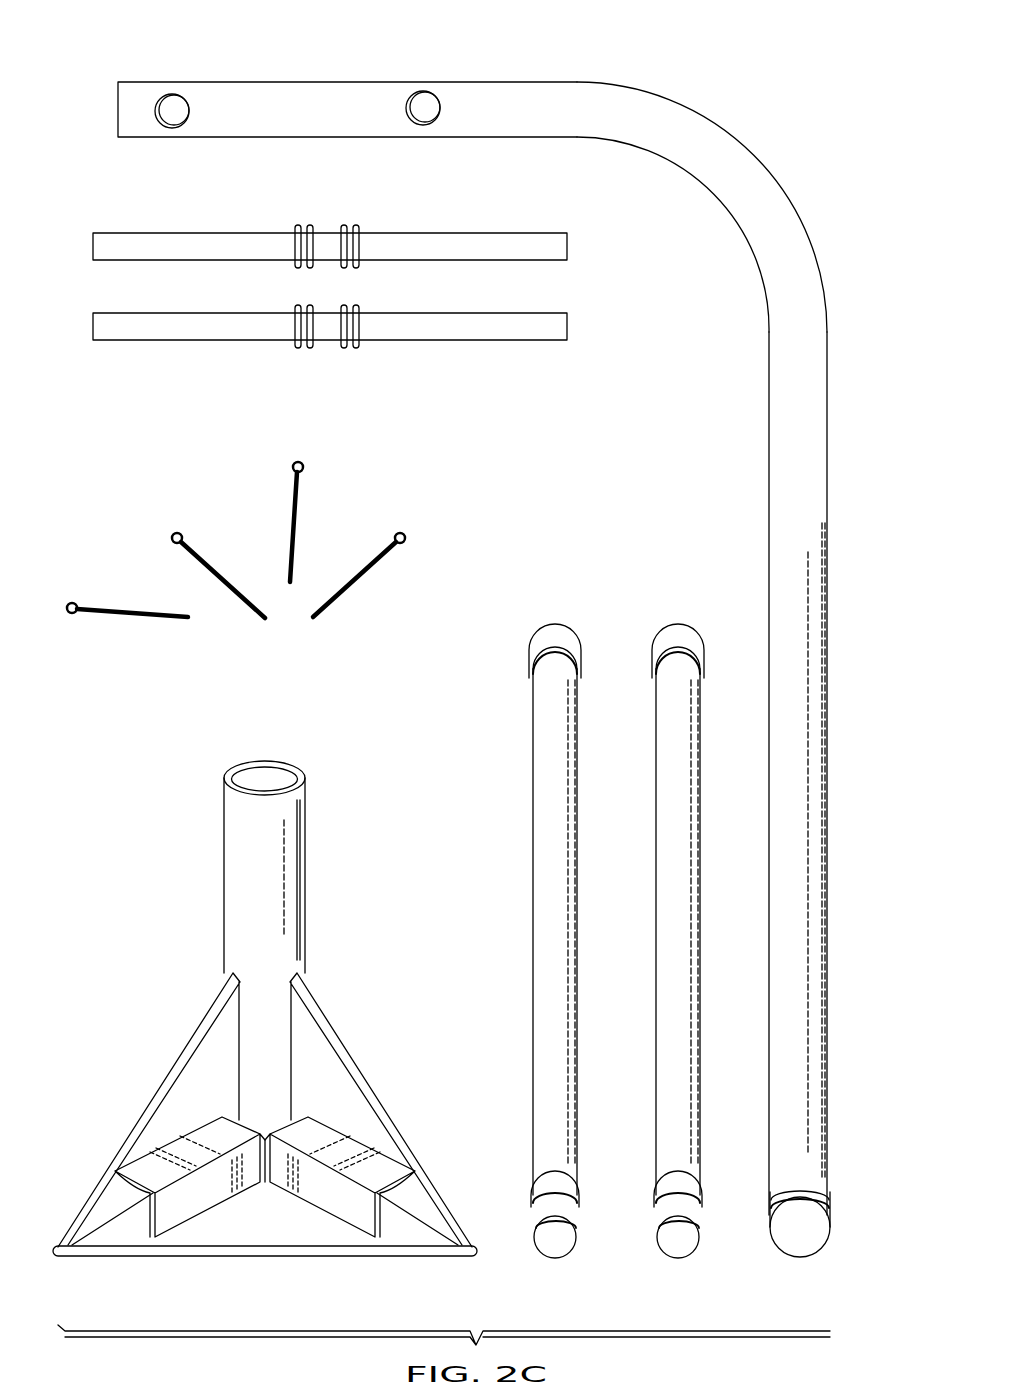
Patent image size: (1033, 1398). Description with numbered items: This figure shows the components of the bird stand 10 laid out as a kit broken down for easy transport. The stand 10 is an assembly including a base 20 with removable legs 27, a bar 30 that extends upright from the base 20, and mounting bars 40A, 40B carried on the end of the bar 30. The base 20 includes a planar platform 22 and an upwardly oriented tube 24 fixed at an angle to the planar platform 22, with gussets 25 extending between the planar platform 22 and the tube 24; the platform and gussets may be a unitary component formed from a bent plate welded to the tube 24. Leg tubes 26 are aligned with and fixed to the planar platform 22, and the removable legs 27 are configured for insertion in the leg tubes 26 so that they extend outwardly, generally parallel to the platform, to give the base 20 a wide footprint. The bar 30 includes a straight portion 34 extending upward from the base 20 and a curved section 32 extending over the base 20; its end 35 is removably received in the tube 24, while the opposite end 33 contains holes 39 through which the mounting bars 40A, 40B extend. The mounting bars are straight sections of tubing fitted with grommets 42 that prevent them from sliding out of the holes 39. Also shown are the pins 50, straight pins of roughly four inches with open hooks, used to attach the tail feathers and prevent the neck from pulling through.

The bird stand 10 is at (817, 95).
The base 20 is at (220, 823).
The planar platform 22 is at (228, 1258).
The upwardly oriented tube 24 is at (305, 887).
The gussets 25 is at (194, 1028).
The leg tubes 26 is at (215, 1127).
The removable legs 27 is at (533, 792).
The bar 30 is at (765, 577).
The curved section 32 is at (760, 170).
The end 33 is at (316, 90).
The straight portion 34 is at (826, 905).
The end 35 is at (808, 1245).
The holes 39 is at (170, 100).
The mounting bar 40A is at (118, 245).
The mounting bar 40B is at (118, 327).
The grommets 42 is at (294, 235).
The pins 50 is at (357, 567).